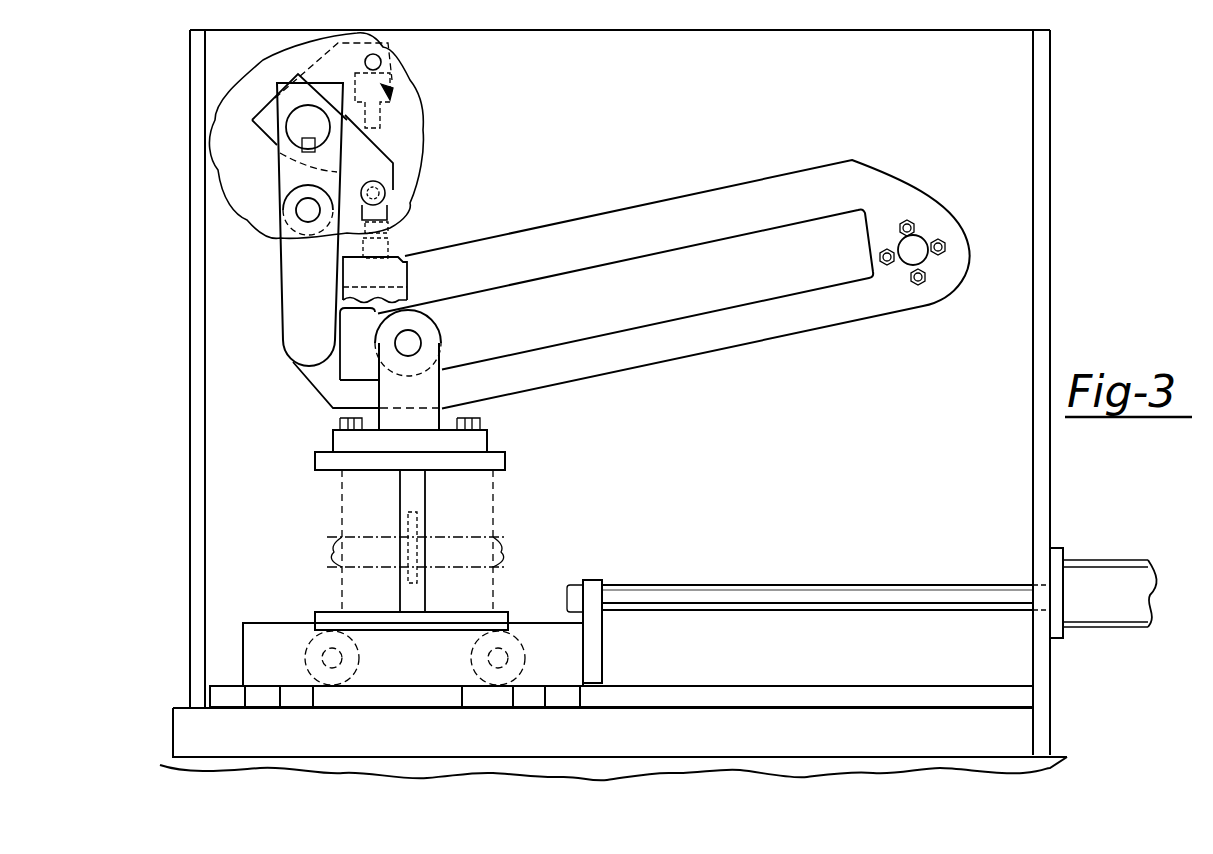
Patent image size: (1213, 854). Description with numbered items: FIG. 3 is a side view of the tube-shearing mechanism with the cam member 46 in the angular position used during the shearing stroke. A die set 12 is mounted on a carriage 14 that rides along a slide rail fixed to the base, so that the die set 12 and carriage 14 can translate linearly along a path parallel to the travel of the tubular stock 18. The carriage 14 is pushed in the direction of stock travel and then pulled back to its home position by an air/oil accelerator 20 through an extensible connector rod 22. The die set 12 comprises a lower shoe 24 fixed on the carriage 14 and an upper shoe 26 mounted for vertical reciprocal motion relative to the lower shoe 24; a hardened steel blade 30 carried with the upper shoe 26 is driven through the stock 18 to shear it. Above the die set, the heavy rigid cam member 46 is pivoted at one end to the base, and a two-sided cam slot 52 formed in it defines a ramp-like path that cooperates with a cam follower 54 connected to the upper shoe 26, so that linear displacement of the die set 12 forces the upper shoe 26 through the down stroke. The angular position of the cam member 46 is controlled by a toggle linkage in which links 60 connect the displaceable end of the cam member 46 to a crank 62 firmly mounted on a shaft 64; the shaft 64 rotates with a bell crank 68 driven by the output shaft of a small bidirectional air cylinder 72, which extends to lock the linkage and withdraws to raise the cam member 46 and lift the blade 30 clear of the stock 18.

The die set 12 is at (512, 456).
The carriage 14 is at (250, 650).
The tubular stock 18 is at (503, 553).
The air/oil accelerator 20 is at (1103, 568).
The extensible connector rod 22 is at (833, 550).
The lower shoe 24 is at (333, 613).
The upper shoe 26 is at (305, 464).
The blade 30 is at (420, 527).
The cam member 46 is at (687, 208).
The cam slot 52 is at (707, 303).
The cam follower 54 is at (443, 333).
The links 60 is at (283, 274).
The crank 62 is at (277, 180).
The shaft 64 is at (297, 128).
The bell crank 68 is at (393, 68).
The air cylinder 72 is at (290, 323).